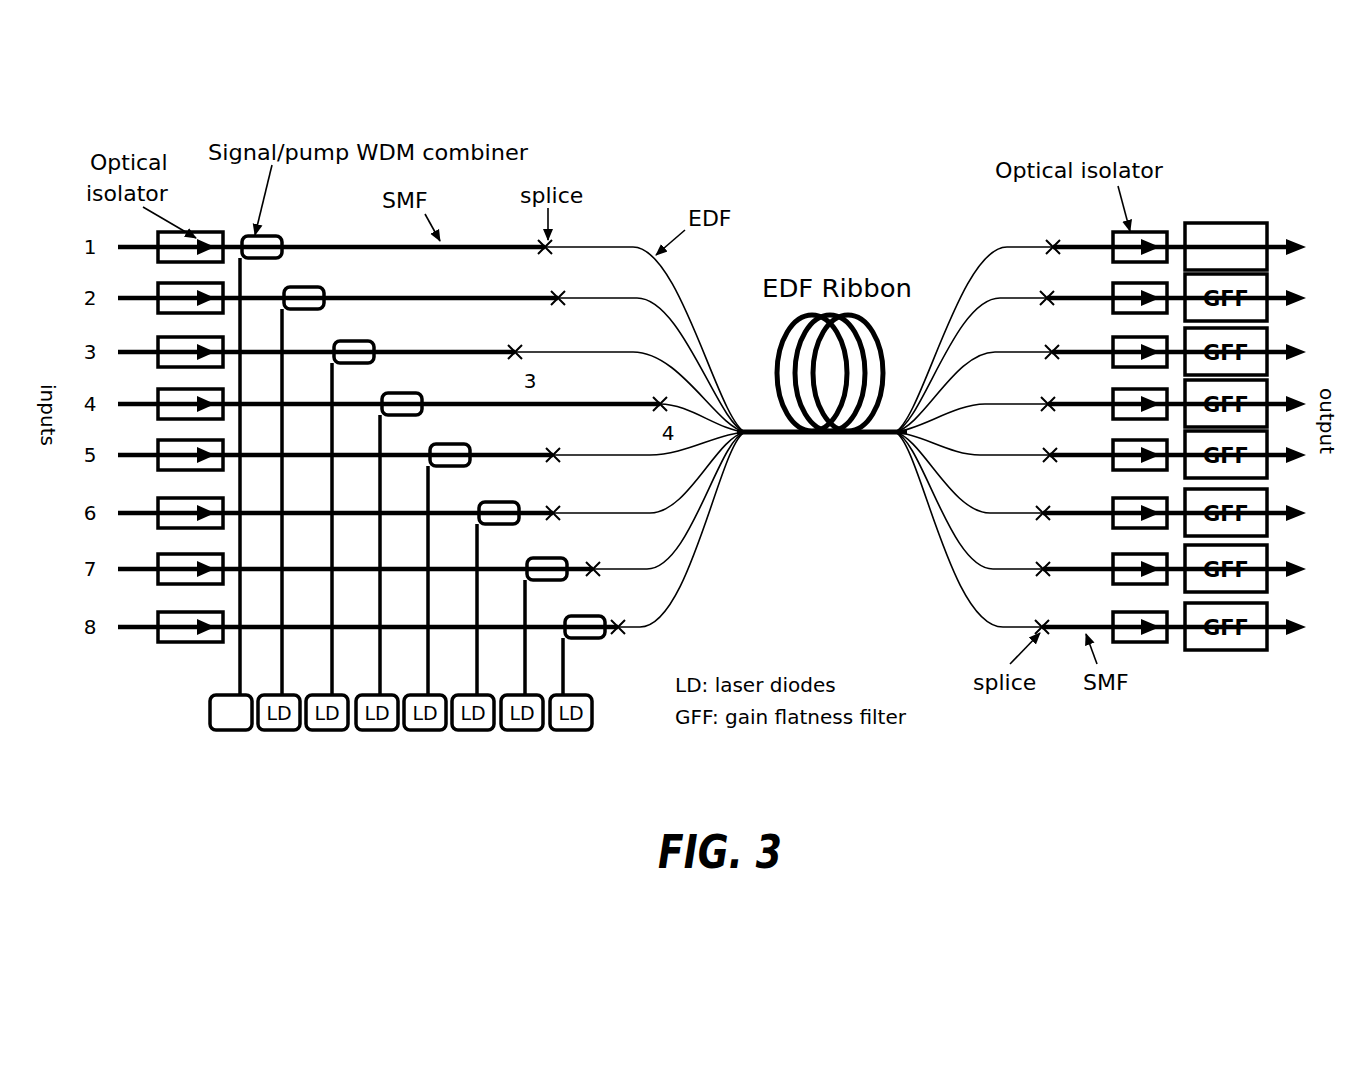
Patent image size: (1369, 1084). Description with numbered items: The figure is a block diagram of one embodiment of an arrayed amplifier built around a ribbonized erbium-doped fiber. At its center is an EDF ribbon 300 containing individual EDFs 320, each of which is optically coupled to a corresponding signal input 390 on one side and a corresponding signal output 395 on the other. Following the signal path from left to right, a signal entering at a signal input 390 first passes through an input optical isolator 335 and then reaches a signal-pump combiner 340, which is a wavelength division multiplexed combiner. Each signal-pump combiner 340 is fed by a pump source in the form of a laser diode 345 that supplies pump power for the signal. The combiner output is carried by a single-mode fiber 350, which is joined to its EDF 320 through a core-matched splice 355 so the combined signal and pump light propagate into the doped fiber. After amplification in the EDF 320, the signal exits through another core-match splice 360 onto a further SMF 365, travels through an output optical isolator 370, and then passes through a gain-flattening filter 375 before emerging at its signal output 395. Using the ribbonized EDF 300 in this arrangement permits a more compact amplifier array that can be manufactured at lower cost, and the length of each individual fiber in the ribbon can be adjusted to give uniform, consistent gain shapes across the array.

The EDF ribbon 300 is at (828, 436).
The EDF 320 is at (673, 288).
The input optical isolator 335 is at (172, 644).
The signal-pump combiner 340 is at (266, 236).
The laser diode 345 is at (226, 732).
The single-mode fiber 350 is at (378, 256).
The core-matched splice 355 is at (548, 256).
The core-match splice 360 is at (1051, 241).
The SMF 365 is at (1045, 621).
The output optical isolator 370 is at (1152, 232).
The gain-flattening filter 375 is at (1247, 223).
The signal input 390 is at (132, 250).
The signal output 395 is at (1292, 297).